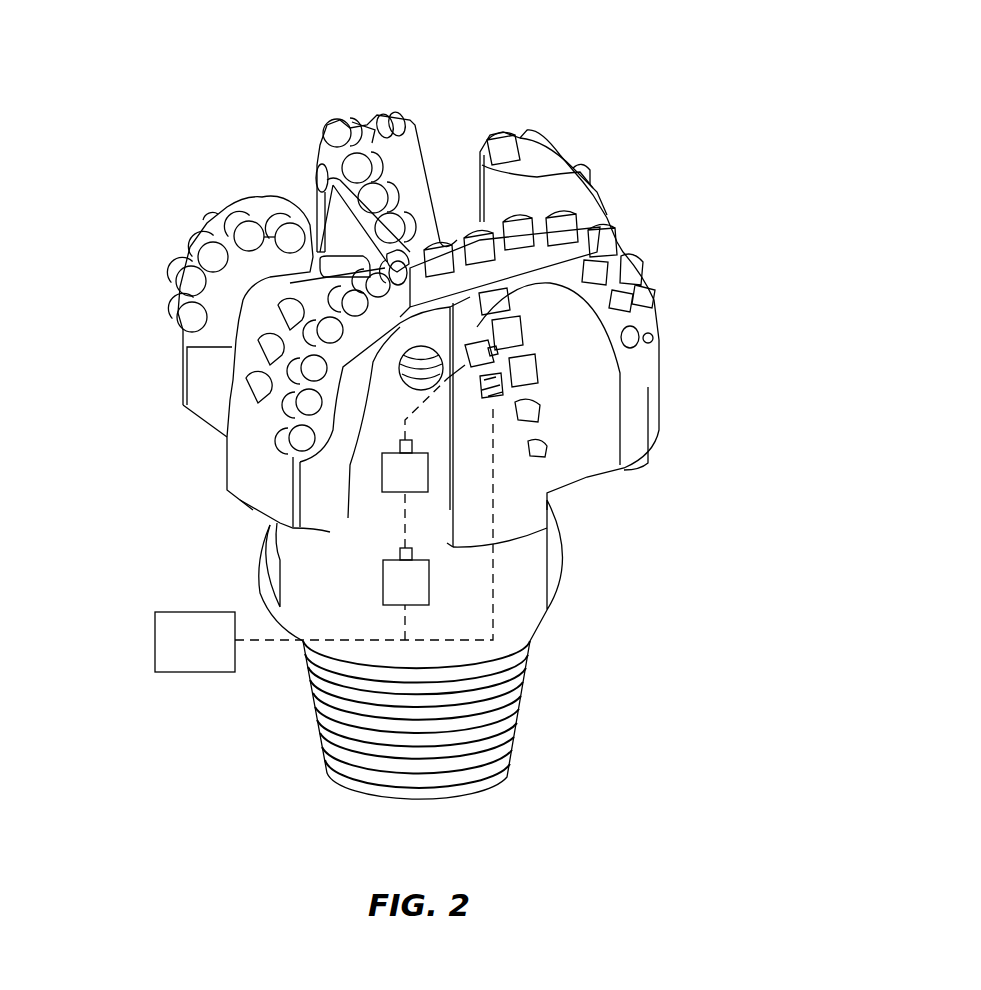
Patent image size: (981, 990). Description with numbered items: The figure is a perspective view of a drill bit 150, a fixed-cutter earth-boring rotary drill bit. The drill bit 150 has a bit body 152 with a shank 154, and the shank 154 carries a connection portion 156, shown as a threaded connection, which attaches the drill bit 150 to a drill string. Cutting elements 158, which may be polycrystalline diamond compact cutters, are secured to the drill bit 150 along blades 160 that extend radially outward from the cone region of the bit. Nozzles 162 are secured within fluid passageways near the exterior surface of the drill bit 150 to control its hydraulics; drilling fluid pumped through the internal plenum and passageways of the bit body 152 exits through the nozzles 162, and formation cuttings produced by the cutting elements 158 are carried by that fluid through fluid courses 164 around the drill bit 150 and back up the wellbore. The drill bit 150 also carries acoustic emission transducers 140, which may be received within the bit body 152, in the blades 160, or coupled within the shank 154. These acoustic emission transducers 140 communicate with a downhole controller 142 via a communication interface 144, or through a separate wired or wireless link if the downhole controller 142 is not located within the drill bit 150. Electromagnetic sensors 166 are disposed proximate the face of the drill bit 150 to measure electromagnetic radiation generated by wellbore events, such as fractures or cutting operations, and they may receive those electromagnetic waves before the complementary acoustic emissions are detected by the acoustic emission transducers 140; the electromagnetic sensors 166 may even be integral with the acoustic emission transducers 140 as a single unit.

The acoustic emission transducers 140 is at (477, 333).
The downhole controller 142 is at (216, 653).
The communication interface 144 is at (490, 610).
The drill bit 150 is at (714, 108).
The bit body 152 is at (313, 562).
The shank 154 is at (482, 680).
The connection portion 156 is at (462, 770).
The cutting elements 158 is at (342, 138).
The blades 160 is at (587, 450).
The nozzles 162 is at (520, 396).
The fluid courses 164 is at (196, 437).
The electromagnetic sensors 166 is at (520, 396).